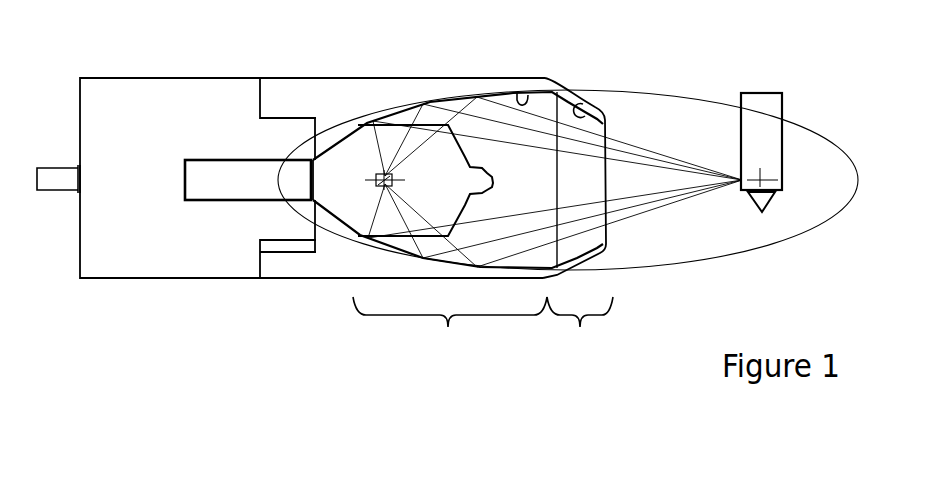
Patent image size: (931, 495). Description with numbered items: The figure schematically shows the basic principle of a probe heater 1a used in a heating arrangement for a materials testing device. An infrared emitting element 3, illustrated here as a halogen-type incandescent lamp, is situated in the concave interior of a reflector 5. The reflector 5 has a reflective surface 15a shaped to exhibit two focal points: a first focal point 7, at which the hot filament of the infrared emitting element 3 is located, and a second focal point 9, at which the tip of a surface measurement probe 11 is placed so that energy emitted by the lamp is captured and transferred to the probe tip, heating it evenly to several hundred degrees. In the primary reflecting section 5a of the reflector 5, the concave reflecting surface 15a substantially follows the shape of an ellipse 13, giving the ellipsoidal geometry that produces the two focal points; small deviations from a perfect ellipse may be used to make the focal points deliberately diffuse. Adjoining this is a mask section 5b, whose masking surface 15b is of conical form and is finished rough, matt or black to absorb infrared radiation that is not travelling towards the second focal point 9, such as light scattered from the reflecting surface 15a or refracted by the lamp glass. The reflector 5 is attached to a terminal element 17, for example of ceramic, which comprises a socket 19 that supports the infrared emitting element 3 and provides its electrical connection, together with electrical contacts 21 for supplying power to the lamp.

The probe heater 1a is at (125, 318).
The infrared emitting element 3 is at (353, 148).
The reflector 5 is at (463, 92).
The primary reflecting section 5a is at (455, 222).
The mask section 5b is at (580, 324).
The first focal point 7 is at (377, 190).
The second focal point 9 is at (757, 183).
The surface measurement probe 11 is at (770, 157).
The ellipse 13 is at (628, 92).
The reflective surface 15a is at (517, 93).
The masking surface 15b is at (584, 105).
The terminal element 17 is at (117, 105).
The socket 19 is at (240, 202).
The electrical contacts 21 is at (60, 180).